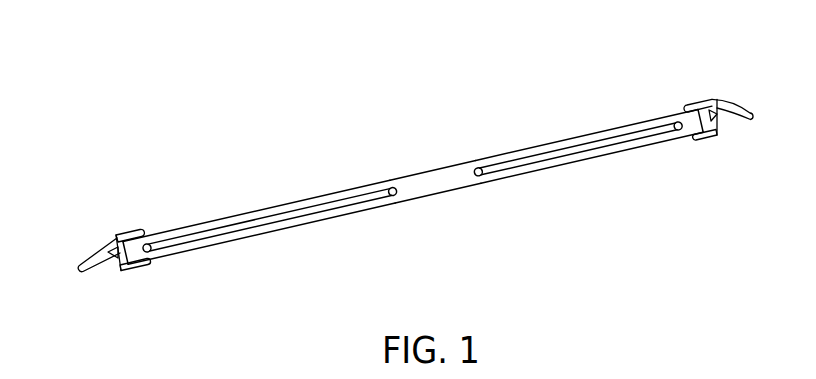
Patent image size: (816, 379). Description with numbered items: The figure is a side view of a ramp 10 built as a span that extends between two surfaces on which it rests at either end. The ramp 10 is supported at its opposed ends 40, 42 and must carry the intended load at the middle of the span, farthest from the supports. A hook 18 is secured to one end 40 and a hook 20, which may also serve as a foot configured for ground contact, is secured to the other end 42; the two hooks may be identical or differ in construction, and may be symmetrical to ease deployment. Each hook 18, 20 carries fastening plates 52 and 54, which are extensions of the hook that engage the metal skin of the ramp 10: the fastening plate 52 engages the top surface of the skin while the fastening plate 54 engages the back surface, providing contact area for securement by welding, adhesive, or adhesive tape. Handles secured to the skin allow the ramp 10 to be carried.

The ramp 10 is at (413, 185).
The hook 18 is at (719, 117).
The hook 20 is at (117, 263).
The end 40 is at (743, 100).
The end 42 is at (69, 229).
The fastening plate 52 is at (138, 239).
The fastening plate 54 is at (146, 260).